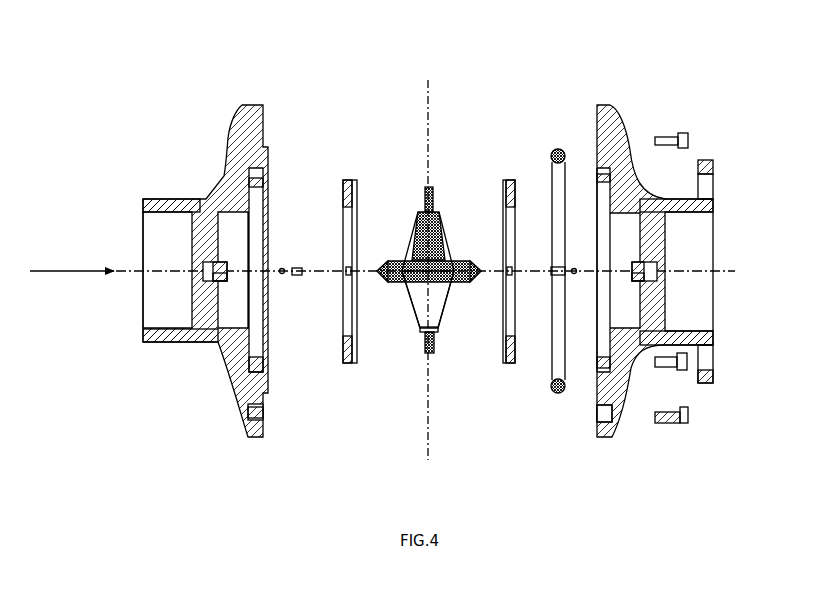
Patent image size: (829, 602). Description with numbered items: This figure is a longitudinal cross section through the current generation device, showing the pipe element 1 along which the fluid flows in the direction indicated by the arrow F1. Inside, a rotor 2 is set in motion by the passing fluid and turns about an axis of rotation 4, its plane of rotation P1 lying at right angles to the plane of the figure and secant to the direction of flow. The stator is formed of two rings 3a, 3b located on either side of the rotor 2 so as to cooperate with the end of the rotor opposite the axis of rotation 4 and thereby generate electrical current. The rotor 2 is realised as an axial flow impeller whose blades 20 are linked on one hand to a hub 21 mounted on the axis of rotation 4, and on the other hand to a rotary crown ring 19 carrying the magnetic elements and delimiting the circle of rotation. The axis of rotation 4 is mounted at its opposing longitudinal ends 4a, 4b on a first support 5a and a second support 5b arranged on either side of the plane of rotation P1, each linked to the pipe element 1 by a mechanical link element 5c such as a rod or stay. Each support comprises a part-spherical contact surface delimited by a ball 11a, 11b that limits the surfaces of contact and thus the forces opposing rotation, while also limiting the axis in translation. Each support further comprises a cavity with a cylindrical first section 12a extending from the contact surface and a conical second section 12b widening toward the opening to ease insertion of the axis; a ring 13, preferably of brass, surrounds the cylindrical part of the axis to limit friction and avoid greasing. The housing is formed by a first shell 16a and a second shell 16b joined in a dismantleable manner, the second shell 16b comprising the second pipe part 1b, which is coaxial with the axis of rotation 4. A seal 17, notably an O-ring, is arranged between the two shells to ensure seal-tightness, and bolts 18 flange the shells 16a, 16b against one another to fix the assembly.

The pipe element 1 is at (655, 194).
The second pipe part 1b is at (648, 230).
The rotor 2 is at (442, 237).
The ring 3a is at (510, 172).
The ring 3b is at (350, 177).
The axis of rotation 4 is at (427, 277).
The longitudinal end 4a is at (378, 268).
The longitudinal end 4b is at (480, 274).
The first support 5a is at (210, 276).
The second support 5b is at (650, 276).
The mechanical link element 5c is at (207, 229).
The ball 11a is at (284, 276).
The ball 11b is at (575, 277).
The first section 12a is at (205, 272).
The second section 12b is at (221, 281).
The ring 13 is at (300, 277).
The first shell 16a is at (199, 223).
The second shell 16b is at (689, 225).
The seal 17 is at (553, 392).
The bolts 18 is at (664, 133).
The rotary crown ring 19 is at (433, 349).
The blades 20 is at (420, 298).
The hub 21 is at (455, 261).
The plane of rotation P1 is at (441, 267).
The arrow indicating direction of flow F1 is at (72, 263).